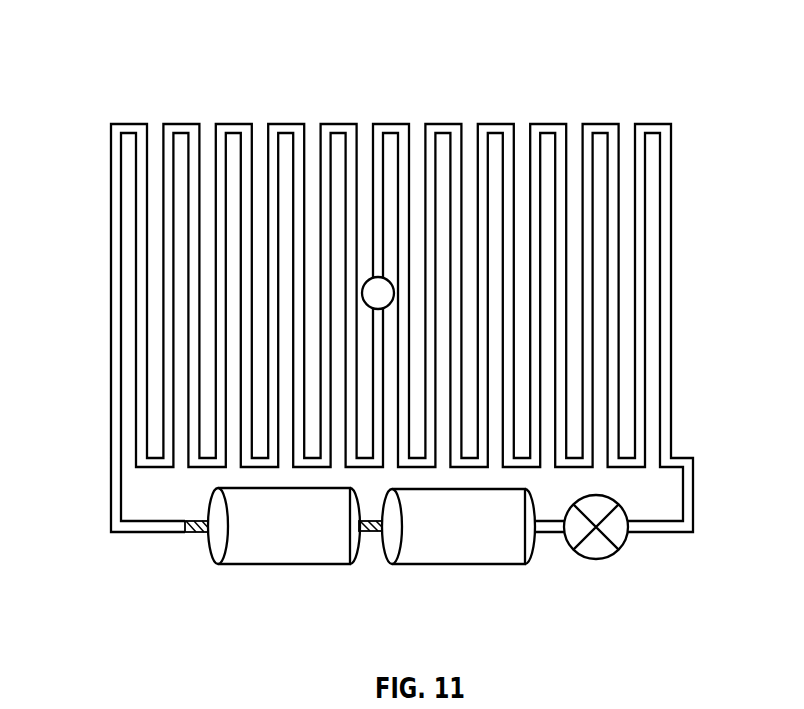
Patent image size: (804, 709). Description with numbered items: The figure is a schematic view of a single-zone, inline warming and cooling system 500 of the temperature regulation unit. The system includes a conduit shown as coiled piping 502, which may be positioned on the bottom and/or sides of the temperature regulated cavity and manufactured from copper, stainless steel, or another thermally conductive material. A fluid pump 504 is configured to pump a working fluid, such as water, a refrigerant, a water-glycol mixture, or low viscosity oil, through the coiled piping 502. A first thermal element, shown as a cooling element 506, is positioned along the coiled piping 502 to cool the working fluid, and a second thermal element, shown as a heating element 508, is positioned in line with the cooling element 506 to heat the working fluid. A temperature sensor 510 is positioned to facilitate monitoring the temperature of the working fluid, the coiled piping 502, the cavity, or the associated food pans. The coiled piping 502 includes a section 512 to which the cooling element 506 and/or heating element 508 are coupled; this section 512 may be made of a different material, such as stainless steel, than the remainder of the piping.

The single-zone, inline warming and cooling system 500 is at (110, 45).
The coiled piping 502 is at (233, 123).
The fluid pump 504 is at (597, 559).
The cooling element 506 is at (458, 564).
The heating element 508 is at (285, 564).
The temperature sensor 510 is at (378, 290).
The section 512 is at (195, 534).